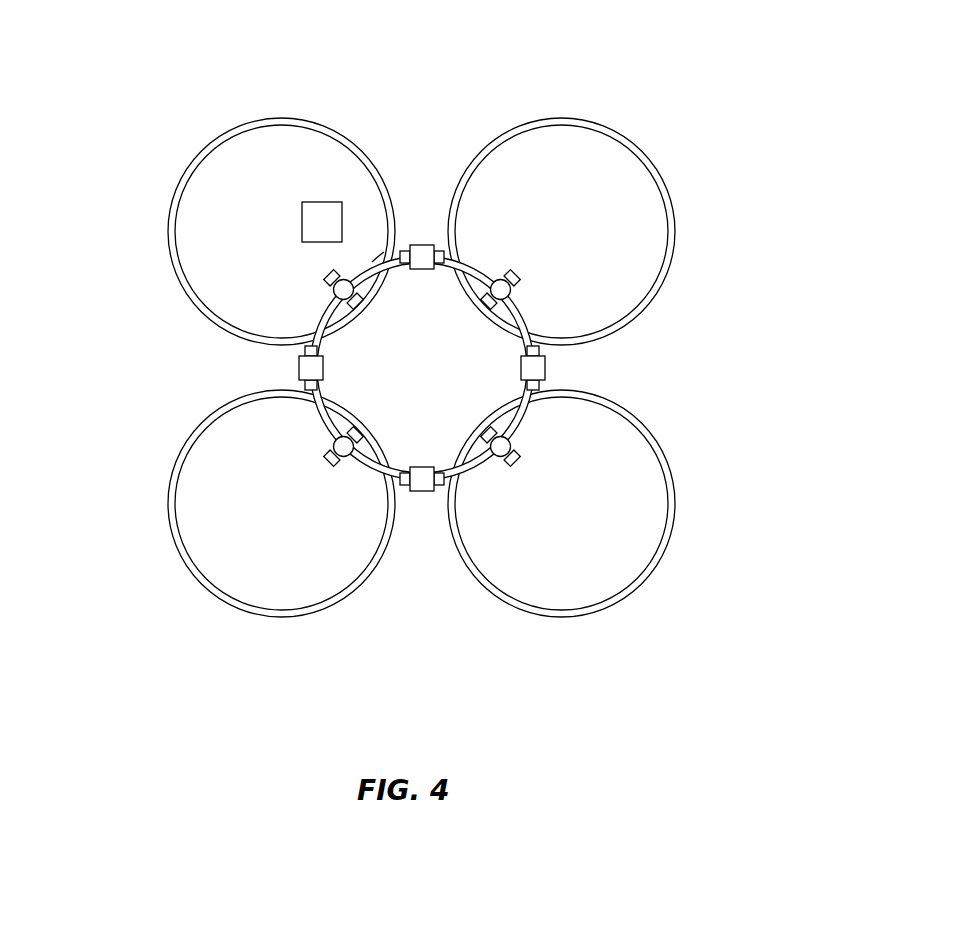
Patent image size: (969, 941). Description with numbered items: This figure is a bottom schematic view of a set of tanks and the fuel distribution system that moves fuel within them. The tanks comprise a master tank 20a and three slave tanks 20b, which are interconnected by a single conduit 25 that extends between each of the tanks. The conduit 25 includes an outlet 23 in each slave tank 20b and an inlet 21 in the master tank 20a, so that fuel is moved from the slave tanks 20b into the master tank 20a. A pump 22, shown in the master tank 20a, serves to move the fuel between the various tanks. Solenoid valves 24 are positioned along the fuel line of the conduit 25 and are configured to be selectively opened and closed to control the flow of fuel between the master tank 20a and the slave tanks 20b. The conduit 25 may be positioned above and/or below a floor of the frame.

The master tank 20a is at (203, 185).
The slave tank 20b is at (625, 185).
The inlet 21 is at (338, 287).
The pump 22 is at (298, 212).
The outlet 23 is at (506, 281).
The solenoid valve 24 is at (424, 245).
The conduit 25 is at (378, 257).